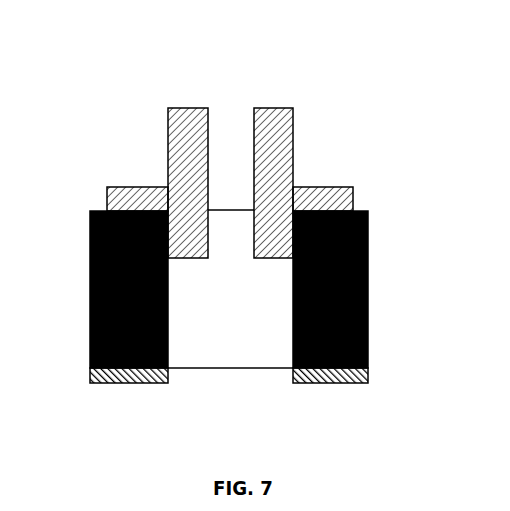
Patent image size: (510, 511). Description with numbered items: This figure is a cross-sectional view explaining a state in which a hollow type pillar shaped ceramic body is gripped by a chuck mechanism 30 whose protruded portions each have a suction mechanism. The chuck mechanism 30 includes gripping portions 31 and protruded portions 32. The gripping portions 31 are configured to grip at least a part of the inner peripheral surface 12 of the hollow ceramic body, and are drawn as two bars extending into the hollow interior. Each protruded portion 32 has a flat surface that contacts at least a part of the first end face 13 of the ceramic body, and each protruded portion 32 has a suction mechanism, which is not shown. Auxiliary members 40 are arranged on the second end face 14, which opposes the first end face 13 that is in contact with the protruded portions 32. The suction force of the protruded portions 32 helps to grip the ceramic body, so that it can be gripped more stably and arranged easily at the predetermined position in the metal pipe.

The inner peripheral surface 12 is at (292, 327).
The first end face 13 is at (102, 210).
The second end face 14 is at (120, 368).
The chuck mechanism 30 is at (280, 139).
The gripping portion 31 is at (270, 145).
The protruded portion 32 is at (258, 154).
The auxiliary member 40 is at (340, 376).